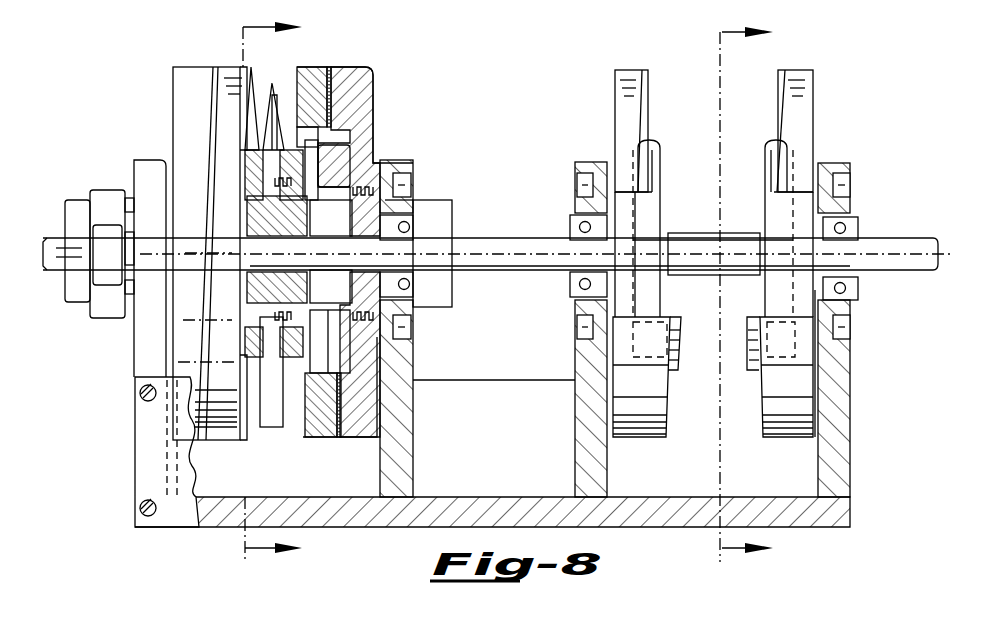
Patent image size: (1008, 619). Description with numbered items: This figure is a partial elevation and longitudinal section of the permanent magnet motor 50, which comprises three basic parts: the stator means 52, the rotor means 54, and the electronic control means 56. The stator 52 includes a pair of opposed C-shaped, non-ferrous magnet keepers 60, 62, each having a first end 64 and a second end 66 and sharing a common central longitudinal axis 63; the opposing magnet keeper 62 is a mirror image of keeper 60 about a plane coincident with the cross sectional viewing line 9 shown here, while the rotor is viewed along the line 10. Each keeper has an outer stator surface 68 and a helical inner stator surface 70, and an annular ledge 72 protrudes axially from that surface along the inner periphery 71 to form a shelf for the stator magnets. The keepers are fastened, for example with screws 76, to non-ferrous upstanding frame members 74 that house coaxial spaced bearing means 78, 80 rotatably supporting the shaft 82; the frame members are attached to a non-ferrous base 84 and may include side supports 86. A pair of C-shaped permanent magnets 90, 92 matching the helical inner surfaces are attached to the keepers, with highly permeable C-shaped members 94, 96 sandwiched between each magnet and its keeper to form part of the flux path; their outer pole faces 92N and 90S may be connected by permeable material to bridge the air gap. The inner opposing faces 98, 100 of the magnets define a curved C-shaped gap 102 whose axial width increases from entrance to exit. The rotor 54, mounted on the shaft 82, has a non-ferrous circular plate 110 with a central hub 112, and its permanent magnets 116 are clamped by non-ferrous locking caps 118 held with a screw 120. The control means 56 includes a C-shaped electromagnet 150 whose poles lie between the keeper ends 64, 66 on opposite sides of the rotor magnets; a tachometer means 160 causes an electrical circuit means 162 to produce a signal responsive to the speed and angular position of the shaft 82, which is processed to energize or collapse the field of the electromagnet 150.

The cross sectional viewing line 9— 9 is at (735, 293).
The viewing line 10— 10 is at (247, 289).
The permanent magnet motor 50 is at (100, 96).
The stator means 52 is at (185, 48).
The rotor means 54 is at (287, 50).
The electronic control means 56 is at (464, 198).
The magnet keeper 60 is at (797, 70).
The opposing magnet keeper 62 is at (628, 70).
The central longitudinal axis 63 is at (922, 248).
The first end 64 is at (306, 309).
The second end 66 is at (305, 237).
The outer stator surface 68 is at (173, 124).
The inner stator surface 70 is at (775, 108).
The inner periphery 71 is at (772, 180).
The annular ledge 72 is at (768, 160).
The upstanding frame member 74 is at (400, 397).
The screws / frame member 76 is at (140, 362).
The bearing means 78 is at (570, 298).
The bearing means 80 is at (858, 298).
The shaft 82 is at (526, 252).
The base 84 is at (492, 513).
The side supports 86 is at (140, 458).
The permanent magnet 90 is at (305, 66).
The outer pole face 90S is at (340, 419).
The permanent magnet 92 is at (232, 50).
The outer pole face 92N is at (187, 391).
The C-shaped member 94 is at (335, 97).
The C-shaped member 96 is at (213, 97).
The inner opposing face 98 is at (336, 422).
The inner opposing face 100 is at (235, 430).
The C-shaped gap 102 is at (306, 405).
The circular plate 110 is at (300, 173).
The central hub 112 is at (277, 287).
The permanent magnets 116 is at (249, 114).
The locking caps 118 is at (250, 166).
The screw 120 is at (262, 190).
The C-shaped electromagnet 150 is at (72, 198).
The tachometer means 160 is at (103, 312).
The electrical circuit means 162 is at (107, 268).